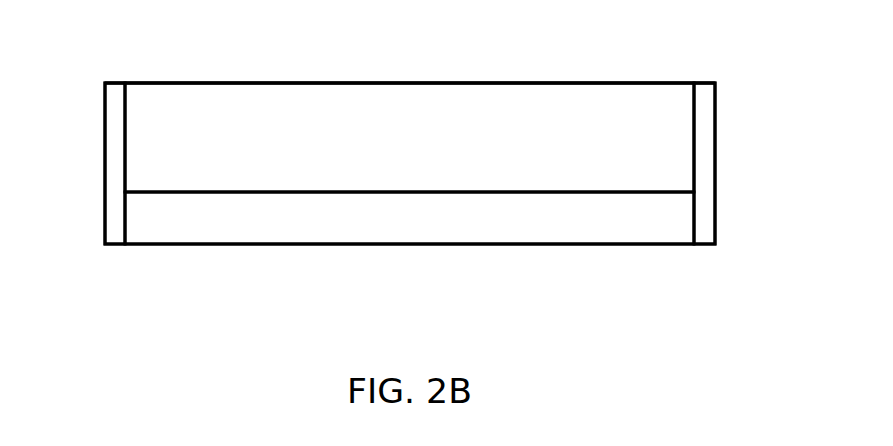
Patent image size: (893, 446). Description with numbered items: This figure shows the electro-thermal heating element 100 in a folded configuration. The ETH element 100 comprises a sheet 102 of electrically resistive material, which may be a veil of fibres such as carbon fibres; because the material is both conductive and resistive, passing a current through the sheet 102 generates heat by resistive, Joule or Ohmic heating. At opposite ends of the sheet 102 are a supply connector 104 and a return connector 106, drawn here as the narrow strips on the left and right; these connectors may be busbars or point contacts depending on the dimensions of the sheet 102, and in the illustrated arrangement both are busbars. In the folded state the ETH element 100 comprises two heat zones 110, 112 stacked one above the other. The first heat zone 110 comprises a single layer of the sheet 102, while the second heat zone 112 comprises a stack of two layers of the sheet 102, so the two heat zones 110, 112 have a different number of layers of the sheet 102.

The electro-thermal heating element 100 is at (683, 270).
The sheet 102 is at (257, 82).
The supply connector 104 is at (112, 142).
The return connector 106 is at (706, 142).
The first heat zone 110 is at (435, 150).
The second heat zone 112 is at (435, 233).